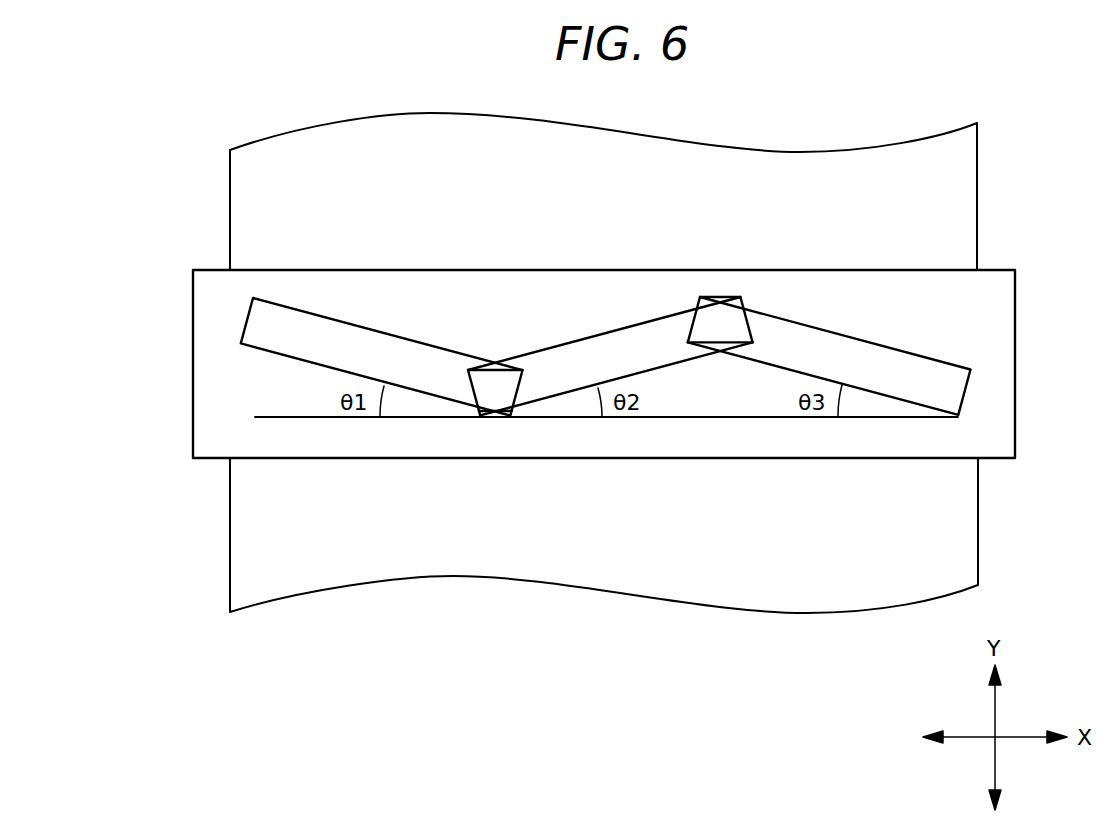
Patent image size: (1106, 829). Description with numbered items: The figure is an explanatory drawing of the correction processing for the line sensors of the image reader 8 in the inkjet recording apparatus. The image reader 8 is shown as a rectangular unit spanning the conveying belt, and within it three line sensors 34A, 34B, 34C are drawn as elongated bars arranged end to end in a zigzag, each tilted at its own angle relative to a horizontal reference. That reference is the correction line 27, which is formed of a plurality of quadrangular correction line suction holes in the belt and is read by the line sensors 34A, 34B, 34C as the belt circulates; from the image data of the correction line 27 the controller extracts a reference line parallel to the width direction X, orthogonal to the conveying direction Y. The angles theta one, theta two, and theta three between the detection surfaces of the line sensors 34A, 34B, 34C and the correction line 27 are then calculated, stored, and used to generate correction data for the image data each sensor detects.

The image reader 8 is at (1015, 302).
The correction line 27 is at (731, 417).
The line sensor 34A is at (390, 360).
The line sensor 34B is at (573, 358).
The line sensor 34C is at (860, 358).